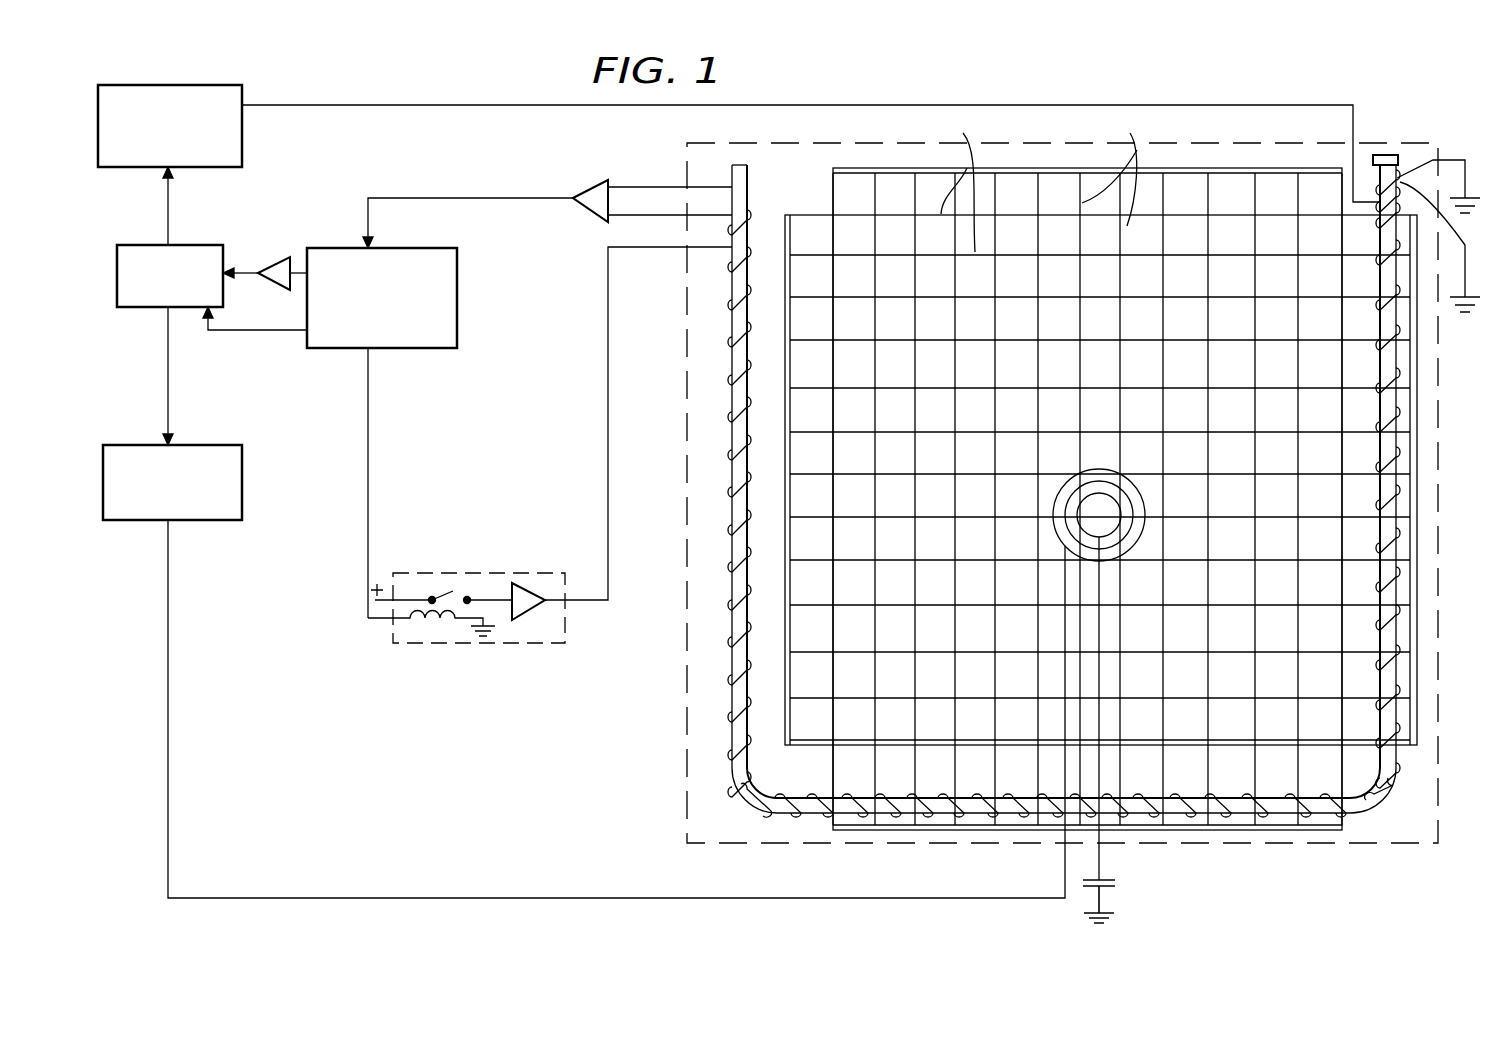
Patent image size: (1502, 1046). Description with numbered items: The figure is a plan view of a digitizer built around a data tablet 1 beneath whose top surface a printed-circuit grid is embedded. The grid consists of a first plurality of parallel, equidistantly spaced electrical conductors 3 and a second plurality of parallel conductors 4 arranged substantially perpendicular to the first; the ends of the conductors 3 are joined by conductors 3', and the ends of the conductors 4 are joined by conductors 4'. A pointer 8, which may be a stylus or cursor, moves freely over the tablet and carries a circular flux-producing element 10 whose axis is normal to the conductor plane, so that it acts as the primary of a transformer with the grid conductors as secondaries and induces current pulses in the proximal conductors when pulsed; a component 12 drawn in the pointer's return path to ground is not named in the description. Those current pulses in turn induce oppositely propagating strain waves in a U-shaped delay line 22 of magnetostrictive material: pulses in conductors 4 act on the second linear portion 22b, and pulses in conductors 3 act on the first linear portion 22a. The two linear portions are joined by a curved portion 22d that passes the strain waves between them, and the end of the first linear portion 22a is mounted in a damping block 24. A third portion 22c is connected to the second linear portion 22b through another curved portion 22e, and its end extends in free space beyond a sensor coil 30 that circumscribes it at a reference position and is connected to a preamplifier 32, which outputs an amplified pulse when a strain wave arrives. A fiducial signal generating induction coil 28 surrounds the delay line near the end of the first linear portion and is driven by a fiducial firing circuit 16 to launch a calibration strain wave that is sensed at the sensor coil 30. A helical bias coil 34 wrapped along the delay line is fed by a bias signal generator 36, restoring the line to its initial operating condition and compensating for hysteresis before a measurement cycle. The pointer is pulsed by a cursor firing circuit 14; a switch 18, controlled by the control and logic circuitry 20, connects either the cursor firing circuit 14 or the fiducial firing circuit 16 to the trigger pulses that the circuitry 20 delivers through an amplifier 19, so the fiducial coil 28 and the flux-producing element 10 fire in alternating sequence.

The data tablet 1 is at (1236, 852).
The first plurality of parallel equidistantly spaced electrical conductors 3 is at (958, 186).
The conductors connecting ends of parallel conductors 3 3' is at (1123, 480).
The second plurality of parallel equidistantly spaced electrical conductors 4 is at (1109, 173).
The conductors connecting ends of parallel conductors 4 4' is at (1091, 528).
The pointer 8 is at (1136, 488).
The flux-producing element 10 is at (1130, 529).
The capacitor 12 is at (1115, 881).
The cursor firing circuit 14 is at (223, 521).
The fiducial firing circuit 16 is at (241, 129).
The switch 18 is at (144, 308).
The amplifier 19 is at (270, 267).
The control and logic circuitry 20 is at (446, 347).
The U-shaped delay line 22 is at (1052, 525).
The first linear portion 22a is at (1390, 396).
The second linear portion 22b is at (975, 816).
The third portion 22c is at (733, 471).
The curved portion 22d is at (1386, 791).
The curved portion 22e is at (731, 770).
The damping block 24 is at (1386, 153).
The fiducial signal generating induction coil 28 is at (1378, 192).
The sensor coil 30 is at (747, 201).
The preamplifier 32 is at (591, 196).
The bias coil 34 is at (733, 726).
The bias signal generator 36 is at (565, 615).